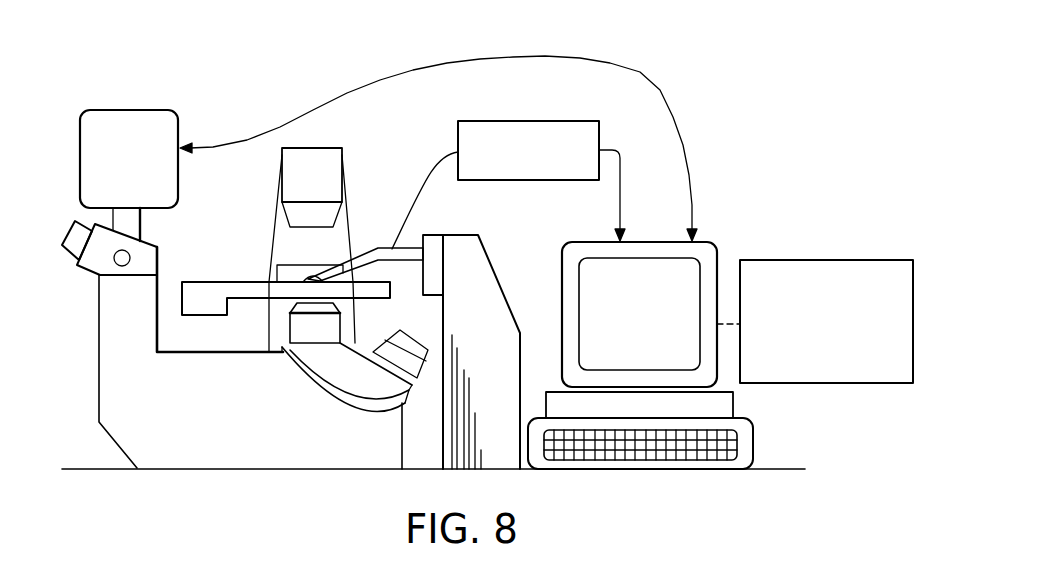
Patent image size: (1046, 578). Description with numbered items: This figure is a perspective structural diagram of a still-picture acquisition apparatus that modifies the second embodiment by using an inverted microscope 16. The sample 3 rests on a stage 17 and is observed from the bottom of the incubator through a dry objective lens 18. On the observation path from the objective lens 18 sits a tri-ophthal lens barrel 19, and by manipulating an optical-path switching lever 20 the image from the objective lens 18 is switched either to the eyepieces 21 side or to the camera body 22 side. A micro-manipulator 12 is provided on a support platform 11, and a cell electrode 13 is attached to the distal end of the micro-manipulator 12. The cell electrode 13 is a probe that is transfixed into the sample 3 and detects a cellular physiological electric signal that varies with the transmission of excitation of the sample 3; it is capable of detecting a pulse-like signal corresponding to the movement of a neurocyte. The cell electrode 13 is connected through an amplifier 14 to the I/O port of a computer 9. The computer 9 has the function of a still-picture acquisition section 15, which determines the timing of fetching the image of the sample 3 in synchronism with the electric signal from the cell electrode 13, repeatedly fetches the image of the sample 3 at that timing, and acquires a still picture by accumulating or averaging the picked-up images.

The sample 3 is at (310, 279).
The computer 9 is at (650, 240).
The support platform 11 is at (492, 274).
The micro-manipulator 12 is at (434, 241).
The cell electrode 13 is at (358, 252).
The amplifier 14 is at (537, 121).
The still-picture acquisition section 15 is at (805, 259).
The inverted microscope 16 is at (126, 442).
The stage 17 is at (201, 281).
The dry objective lens 18 is at (291, 327).
The tri-ophthal lens barrel 19 is at (85, 274).
The optical-path switching lever 20 is at (122, 266).
The eyepieces 21 is at (75, 221).
The camera body 22 is at (180, 183).